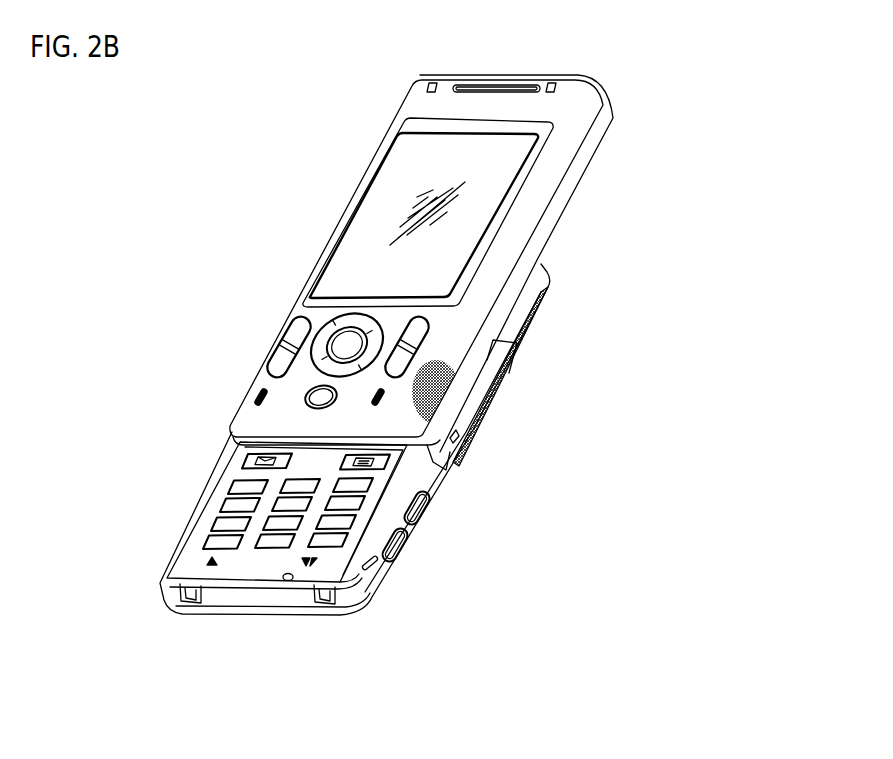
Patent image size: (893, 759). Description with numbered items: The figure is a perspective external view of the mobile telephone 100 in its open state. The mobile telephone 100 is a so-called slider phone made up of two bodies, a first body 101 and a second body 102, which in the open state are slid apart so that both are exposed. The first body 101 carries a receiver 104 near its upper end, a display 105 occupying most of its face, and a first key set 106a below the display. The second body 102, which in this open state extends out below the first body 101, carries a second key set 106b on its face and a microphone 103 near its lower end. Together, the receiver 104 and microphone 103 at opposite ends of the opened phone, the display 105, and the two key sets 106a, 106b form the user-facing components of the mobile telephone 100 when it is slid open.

The mobile telephone 100 is at (645, 92).
The first body 101 is at (543, 194).
The second body 102 is at (245, 570).
The microphone 103 is at (283, 581).
The receiver 104 is at (497, 84).
The display 105 is at (388, 180).
The first key set 106a is at (279, 304).
The second key set 106b is at (232, 441).